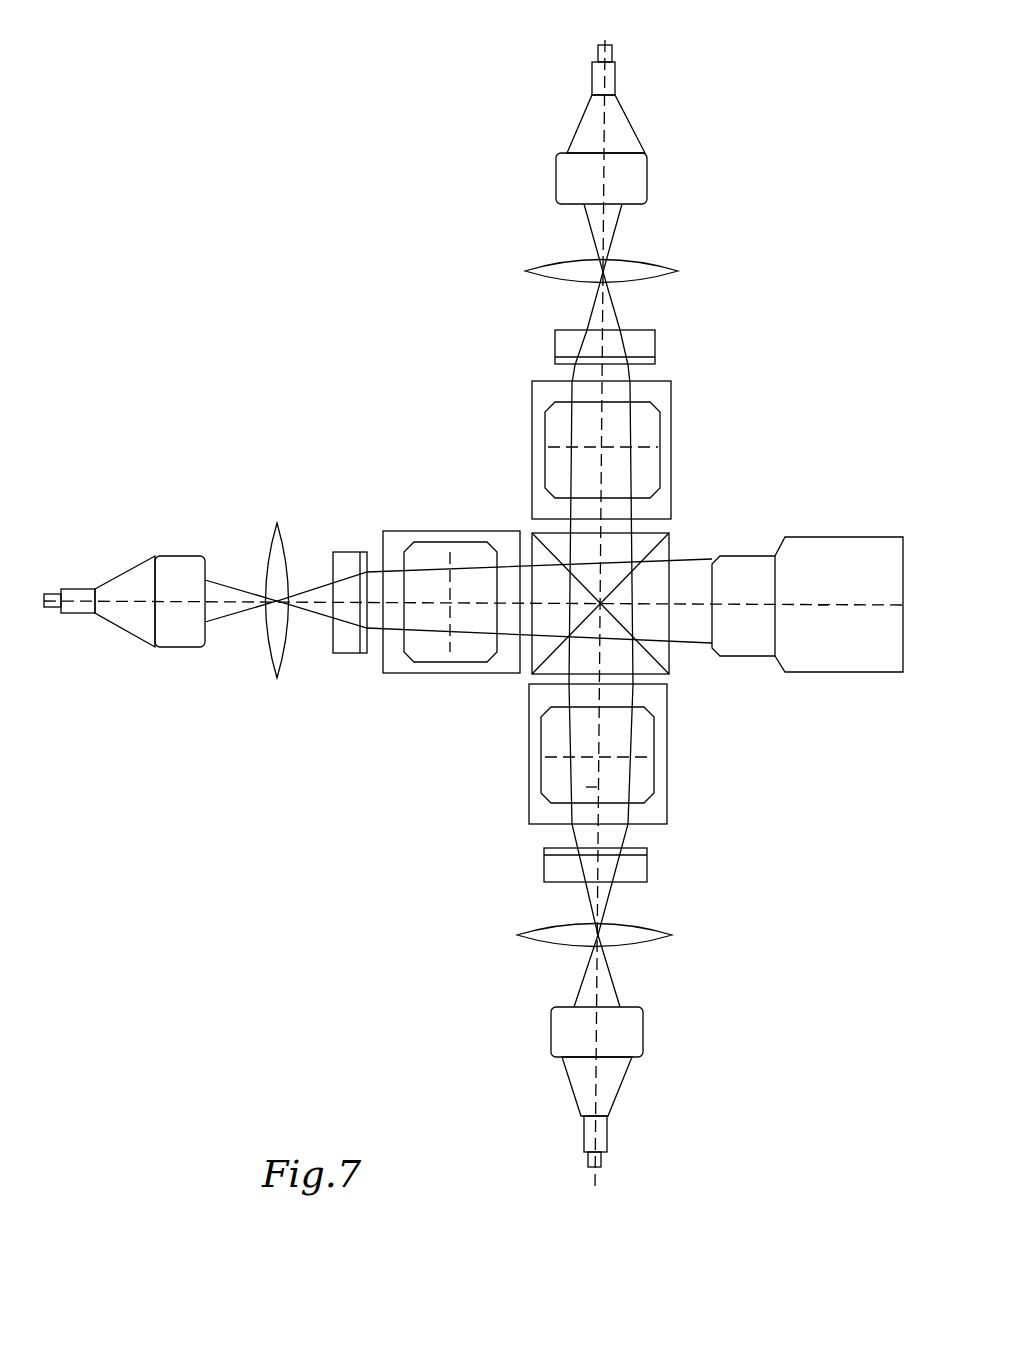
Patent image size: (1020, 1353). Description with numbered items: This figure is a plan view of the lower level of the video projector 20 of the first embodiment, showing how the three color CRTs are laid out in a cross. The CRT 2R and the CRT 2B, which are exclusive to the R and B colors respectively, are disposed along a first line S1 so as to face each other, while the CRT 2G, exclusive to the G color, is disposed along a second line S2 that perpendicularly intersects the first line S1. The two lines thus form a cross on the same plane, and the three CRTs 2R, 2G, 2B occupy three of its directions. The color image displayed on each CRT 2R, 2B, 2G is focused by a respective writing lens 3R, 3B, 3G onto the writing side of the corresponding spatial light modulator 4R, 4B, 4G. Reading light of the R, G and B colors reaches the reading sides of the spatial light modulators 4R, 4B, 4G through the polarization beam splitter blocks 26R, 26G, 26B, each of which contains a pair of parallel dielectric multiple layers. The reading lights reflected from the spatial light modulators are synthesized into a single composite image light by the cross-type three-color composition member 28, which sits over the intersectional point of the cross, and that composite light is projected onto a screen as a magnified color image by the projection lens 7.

The video projector 20 is at (210, 142).
The CRT exclusive to B color 2B is at (633, 128).
The writing lens 3B is at (653, 265).
The spatial light modulator 4B is at (656, 347).
The polarization beam splitter block 26B is at (671, 425).
The second line S2 is at (823, 605).
The cross-type 3-color composition member 28 is at (740, 628).
The projection lens 7 is at (870, 674).
The polarization beam splitter block 26R is at (667, 760).
The first line S1 is at (586, 787).
The spatial light modulator 4R is at (647, 870).
The writing lens 3R is at (657, 943).
The CRT exclusive to R color 2R is at (643, 1037).
The CRT exclusive to G color 2G is at (113, 627).
The writing lens 3G is at (268, 660).
The spatial light modulator 4G is at (346, 654).
The polarization beam splitter block 26G is at (437, 674).
The B color B is at (591, 31).
The G color G is at (52, 578).
The R color R is at (604, 1183).